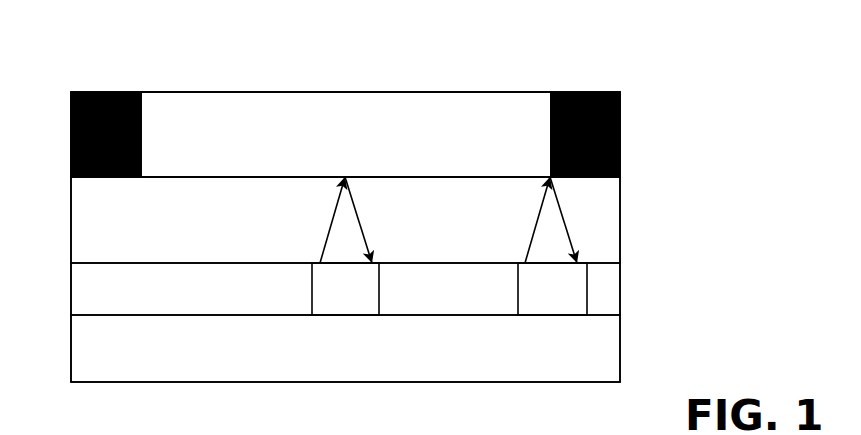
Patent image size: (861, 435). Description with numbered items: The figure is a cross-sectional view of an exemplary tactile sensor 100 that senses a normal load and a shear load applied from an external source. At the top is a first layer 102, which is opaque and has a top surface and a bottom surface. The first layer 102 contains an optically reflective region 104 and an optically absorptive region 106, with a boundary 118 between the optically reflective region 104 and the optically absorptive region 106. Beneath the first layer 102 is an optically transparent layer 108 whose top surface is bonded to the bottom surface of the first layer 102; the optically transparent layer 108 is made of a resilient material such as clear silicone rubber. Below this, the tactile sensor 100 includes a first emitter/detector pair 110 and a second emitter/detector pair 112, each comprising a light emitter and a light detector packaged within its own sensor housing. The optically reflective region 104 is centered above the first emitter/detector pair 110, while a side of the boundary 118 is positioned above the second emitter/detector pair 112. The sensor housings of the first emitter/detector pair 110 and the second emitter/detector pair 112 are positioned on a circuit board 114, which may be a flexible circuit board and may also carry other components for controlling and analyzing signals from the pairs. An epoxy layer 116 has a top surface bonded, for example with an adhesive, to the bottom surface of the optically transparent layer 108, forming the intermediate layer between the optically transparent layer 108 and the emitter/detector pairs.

The tactile sensor 100 is at (592, 50).
The first layer 102 is at (620, 133).
The optically reflective region 104 is at (345, 110).
The optically absorptive region 106 is at (107, 92).
The optically transparent layer 108 is at (607, 222).
The first emitter/detector pair 110 is at (347, 305).
The second emitter/detector pair 112 is at (547, 305).
The circuit board 114 is at (602, 367).
The epoxy layer 116 is at (93, 297).
The boundary 118 is at (141, 92).